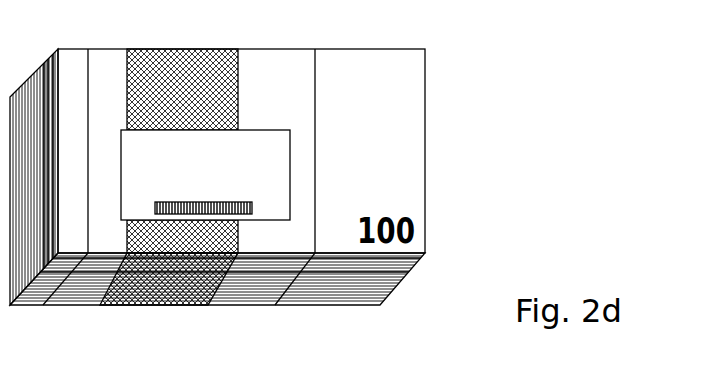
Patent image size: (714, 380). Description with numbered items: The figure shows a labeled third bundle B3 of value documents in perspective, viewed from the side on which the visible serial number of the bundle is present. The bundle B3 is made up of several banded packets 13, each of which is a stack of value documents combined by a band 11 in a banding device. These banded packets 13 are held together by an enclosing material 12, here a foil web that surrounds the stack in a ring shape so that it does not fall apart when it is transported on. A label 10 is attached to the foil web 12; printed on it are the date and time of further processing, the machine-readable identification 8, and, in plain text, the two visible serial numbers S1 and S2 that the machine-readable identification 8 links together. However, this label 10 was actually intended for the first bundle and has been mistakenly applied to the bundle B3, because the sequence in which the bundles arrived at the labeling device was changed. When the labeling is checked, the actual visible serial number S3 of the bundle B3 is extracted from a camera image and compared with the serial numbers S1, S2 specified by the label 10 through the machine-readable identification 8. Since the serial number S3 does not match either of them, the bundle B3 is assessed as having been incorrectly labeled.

The bundle B3 is at (72, 49).
The machine-readable identification 8 is at (255, 210).
The label 10 is at (214, 162).
The band 11 is at (225, 50).
The enclosing material 12 is at (297, 58).
The banded packet 13 is at (165, 262).
The visible serial number S1 is at (252, 174).
The visible serial number S2 is at (250, 190).
The visible serial number S3 is at (376, 62).